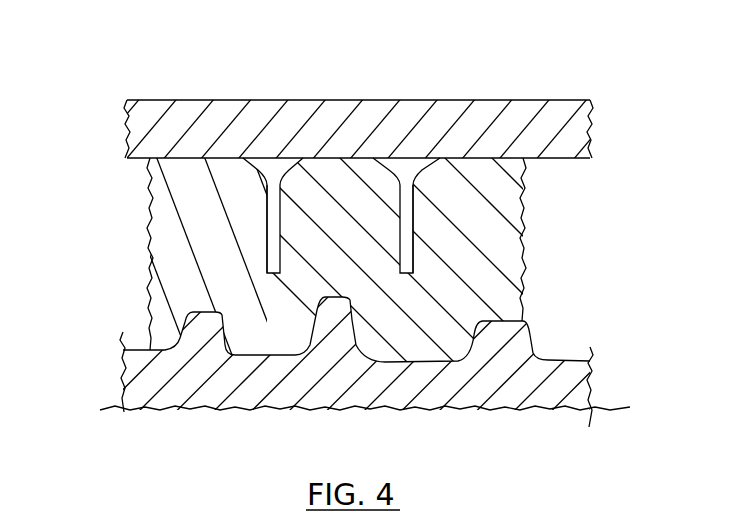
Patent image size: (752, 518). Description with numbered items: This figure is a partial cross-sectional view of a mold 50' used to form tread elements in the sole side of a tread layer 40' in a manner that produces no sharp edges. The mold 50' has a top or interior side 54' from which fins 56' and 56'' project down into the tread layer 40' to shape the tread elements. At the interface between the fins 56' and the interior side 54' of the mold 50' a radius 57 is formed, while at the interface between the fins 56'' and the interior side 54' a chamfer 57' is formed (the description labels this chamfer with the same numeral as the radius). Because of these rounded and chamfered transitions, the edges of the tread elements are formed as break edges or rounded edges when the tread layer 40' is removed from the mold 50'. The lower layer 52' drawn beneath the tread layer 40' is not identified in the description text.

The mold 50' is at (368, 221).
The top or interior side of the mold 54' is at (328, 129).
The lower plate 52' is at (368, 356).
The tread layer 40' is at (375, 194).
The chamfer 57' is at (297, 146).
The radius 57 is at (401, 146).
The fins 56'' is at (157, 229).
The fins 56' is at (521, 229).